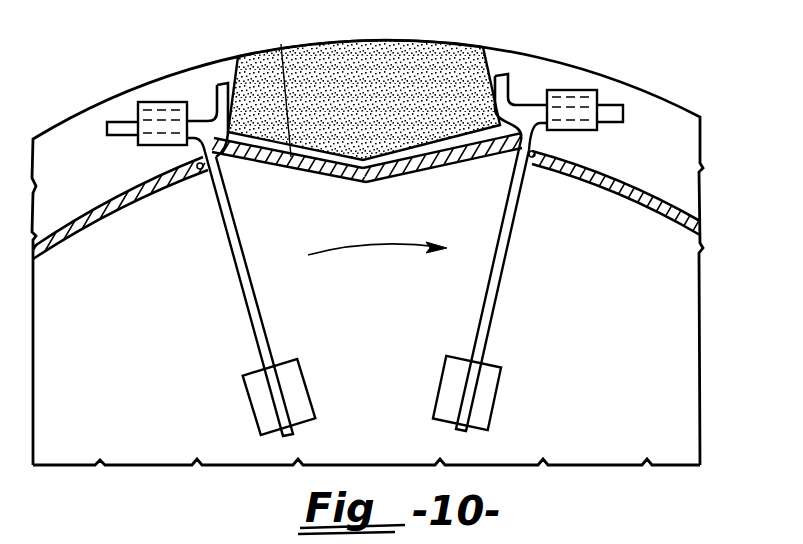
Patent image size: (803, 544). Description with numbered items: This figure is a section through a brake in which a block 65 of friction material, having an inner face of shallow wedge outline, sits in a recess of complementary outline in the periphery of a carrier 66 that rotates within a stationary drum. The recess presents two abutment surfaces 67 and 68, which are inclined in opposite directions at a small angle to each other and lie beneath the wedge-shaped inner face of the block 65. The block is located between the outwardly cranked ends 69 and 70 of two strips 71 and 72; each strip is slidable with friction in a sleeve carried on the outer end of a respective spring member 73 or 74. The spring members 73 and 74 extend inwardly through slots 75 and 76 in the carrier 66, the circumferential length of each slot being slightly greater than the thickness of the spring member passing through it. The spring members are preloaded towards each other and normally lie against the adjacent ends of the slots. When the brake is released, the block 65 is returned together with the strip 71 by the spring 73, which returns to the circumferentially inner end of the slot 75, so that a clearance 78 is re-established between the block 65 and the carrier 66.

The block of friction material 65 is at (343, 87).
The carrier 66 is at (673, 207).
The abutment surface 67 is at (310, 162).
The abutment surface 68 is at (485, 147).
The outwardly cranked end of strip 69 is at (225, 92).
The outwardly cranked end of strip 70 is at (508, 93).
The strip 71 is at (115, 127).
The strip 72 is at (618, 113).
The spring member 73 is at (252, 305).
The spring member 74 is at (490, 302).
The slot 75 is at (200, 169).
The slot 76 is at (533, 158).
The clearance 78 is at (279, 85).